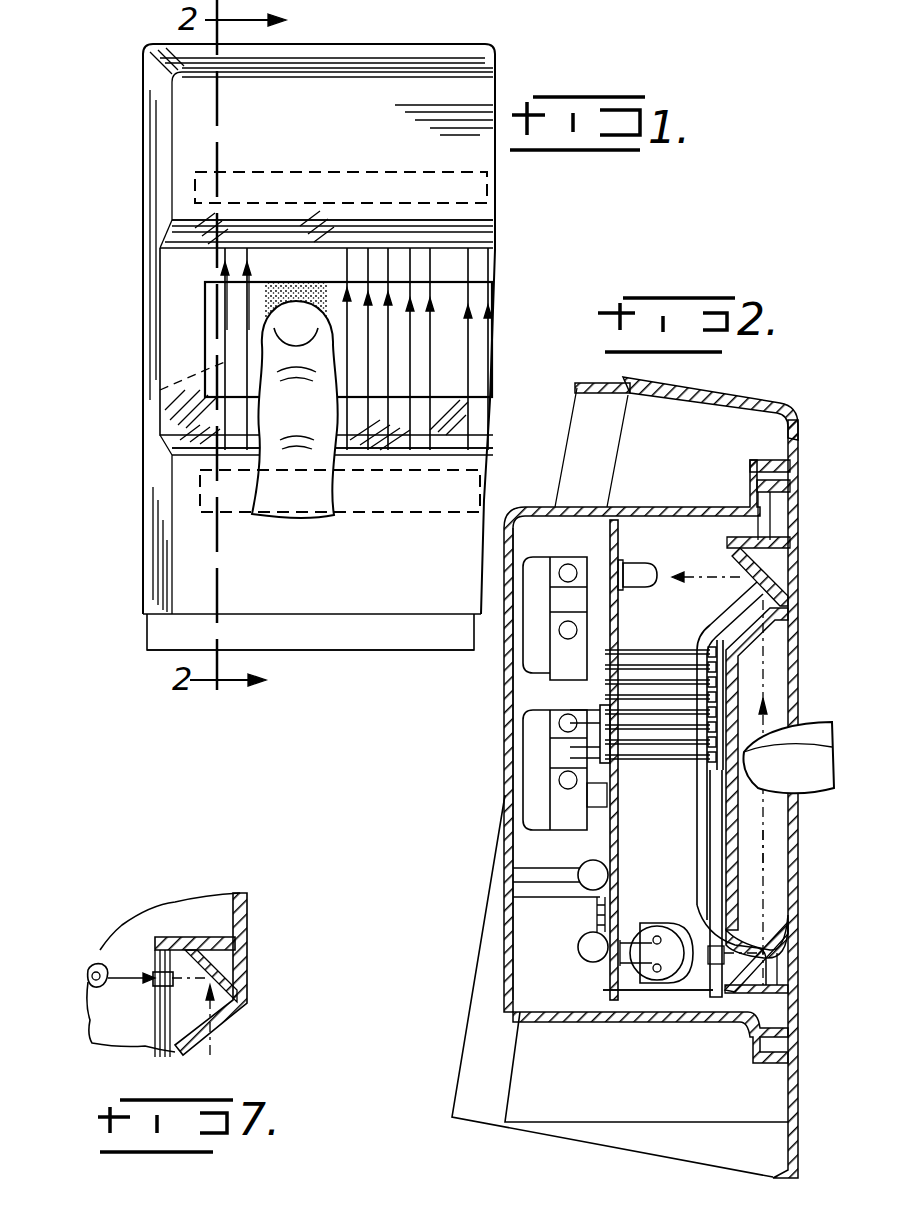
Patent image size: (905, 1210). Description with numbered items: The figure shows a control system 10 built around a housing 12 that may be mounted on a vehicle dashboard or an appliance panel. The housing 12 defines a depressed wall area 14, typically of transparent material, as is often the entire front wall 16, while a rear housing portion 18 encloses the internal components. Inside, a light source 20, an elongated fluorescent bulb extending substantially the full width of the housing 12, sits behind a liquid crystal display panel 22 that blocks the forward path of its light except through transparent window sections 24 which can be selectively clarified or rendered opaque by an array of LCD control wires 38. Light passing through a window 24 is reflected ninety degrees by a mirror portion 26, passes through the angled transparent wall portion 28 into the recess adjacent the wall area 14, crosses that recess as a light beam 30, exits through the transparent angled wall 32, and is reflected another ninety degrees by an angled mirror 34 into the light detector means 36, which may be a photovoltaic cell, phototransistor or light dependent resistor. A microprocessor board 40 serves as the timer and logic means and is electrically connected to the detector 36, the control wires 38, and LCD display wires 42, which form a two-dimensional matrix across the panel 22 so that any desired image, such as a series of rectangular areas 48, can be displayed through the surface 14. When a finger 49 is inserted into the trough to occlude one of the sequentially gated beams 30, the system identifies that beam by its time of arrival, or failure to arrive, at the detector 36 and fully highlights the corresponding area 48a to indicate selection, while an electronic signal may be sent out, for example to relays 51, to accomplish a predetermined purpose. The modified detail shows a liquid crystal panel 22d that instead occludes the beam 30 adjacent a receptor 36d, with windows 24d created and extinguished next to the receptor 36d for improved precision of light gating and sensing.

In FIG. 1, the control system 10 is at (432, 28).
In FIG. 1, the housing 12 is at (150, 536).
In FIG. 2, the housing 12 is at (786, 395).
In FIG. 1, the depressed wall area 14 is at (182, 342).
In FIG. 2, the depressed wall area 14 is at (768, 670).
In FIG. 1, the front wall 16 is at (335, 600).
In FIG. 2, the front wall 16 is at (800, 1082).
In FIG. 2, the rear housing portion 18 is at (508, 870).
In FIG. 1, the light source 20 is at (433, 505).
In FIG. 2, the light source 20 is at (665, 975).
In FIG. 1, the liquid crystal display panel 22 is at (160, 400).
In FIG. 2, the liquid crystal display panel 22 is at (712, 880).
In FIG. 7, the liquid crystal panel 22d is at (138, 1050).
In FIG. 2, the transparent window sections 24 is at (700, 975).
In FIG. 7, the windows 24d is at (152, 986).
In FIG. 2, the mirror portion 26 is at (792, 921).
In FIG. 1, the transparent wall portion 28 is at (490, 446).
In FIG. 2, the transparent wall portion 28 is at (777, 935).
In FIG. 1, the light beam 30 is at (347, 308).
In FIG. 2, the light beam 30 is at (772, 838).
In FIG. 7, the light beam 30 is at (142, 976).
In FIG. 1, the angled wall 32 is at (493, 262).
In FIG. 2, the angled wall 32 is at (782, 620).
In FIG. 2, the angled mirror 34 is at (736, 568).
In FIG. 1, the light detector means 36 is at (488, 189).
In FIG. 2, the light detector means 36 is at (640, 566).
In FIG. 7, the receptor 36d is at (87, 968).
In FIG. 2, the LCD control wires 38 is at (630, 992).
In FIG. 2, the microprocessor board 40 is at (620, 868).
In FIG. 2, the LCD display wires 42 is at (672, 656).
In FIG. 1, the rectangular areas 48 is at (398, 283).
In FIG. 1, the highlighted area 48a is at (298, 278).
In FIG. 1, the finger 49 is at (312, 490).
In FIG. 2, the finger 49 is at (795, 740).
In FIG. 2, the relays 51 is at (540, 640).